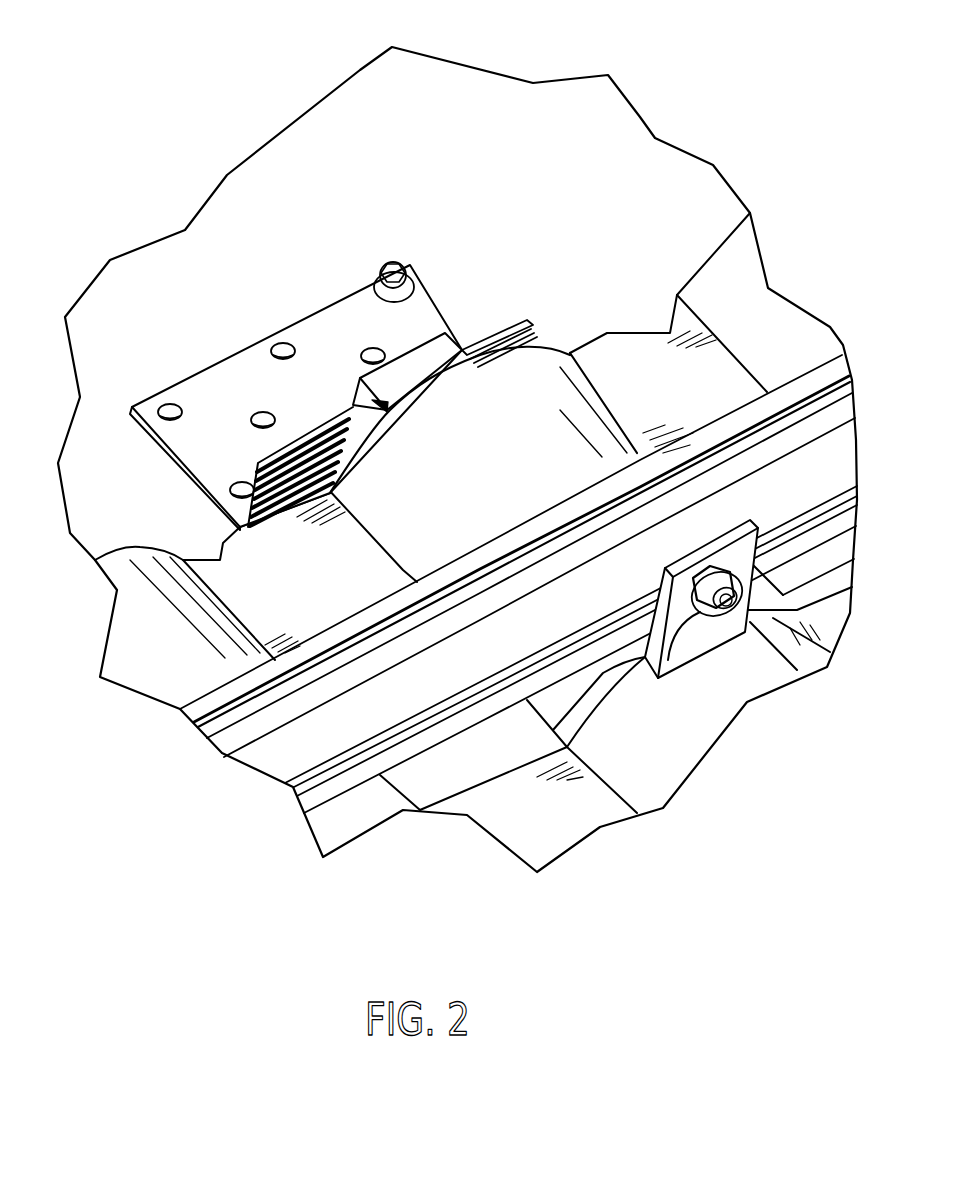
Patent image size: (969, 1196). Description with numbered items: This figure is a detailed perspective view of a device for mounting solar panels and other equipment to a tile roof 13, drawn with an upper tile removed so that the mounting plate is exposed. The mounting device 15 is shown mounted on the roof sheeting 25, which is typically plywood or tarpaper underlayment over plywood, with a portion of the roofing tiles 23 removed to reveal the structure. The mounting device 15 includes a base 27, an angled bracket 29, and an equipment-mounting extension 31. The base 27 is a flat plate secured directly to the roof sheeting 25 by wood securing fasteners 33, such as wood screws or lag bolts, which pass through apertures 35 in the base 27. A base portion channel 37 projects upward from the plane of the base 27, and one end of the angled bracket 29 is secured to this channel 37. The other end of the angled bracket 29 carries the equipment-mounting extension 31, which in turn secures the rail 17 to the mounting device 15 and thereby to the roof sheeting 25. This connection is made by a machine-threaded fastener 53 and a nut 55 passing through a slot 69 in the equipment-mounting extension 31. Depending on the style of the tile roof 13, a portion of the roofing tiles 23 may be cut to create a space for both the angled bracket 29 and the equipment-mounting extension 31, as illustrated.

The tile roof 13 is at (279, 84).
The mounting device 15 is at (215, 333).
The rail 17 is at (803, 372).
The roofing tiles 23 is at (567, 357).
The roof sheeting 25 is at (546, 82).
The base 27 is at (445, 330).
The angled bracket 29 is at (393, 358).
The equipment-mounting extension 31 is at (702, 545).
The wood securing fasteners 33 is at (391, 262).
The apertures 35 is at (166, 403).
The base portion channel 37 is at (515, 330).
The machine-threaded fastener 53 is at (697, 610).
The nut 55 is at (722, 612).
The slot 69 is at (669, 660).